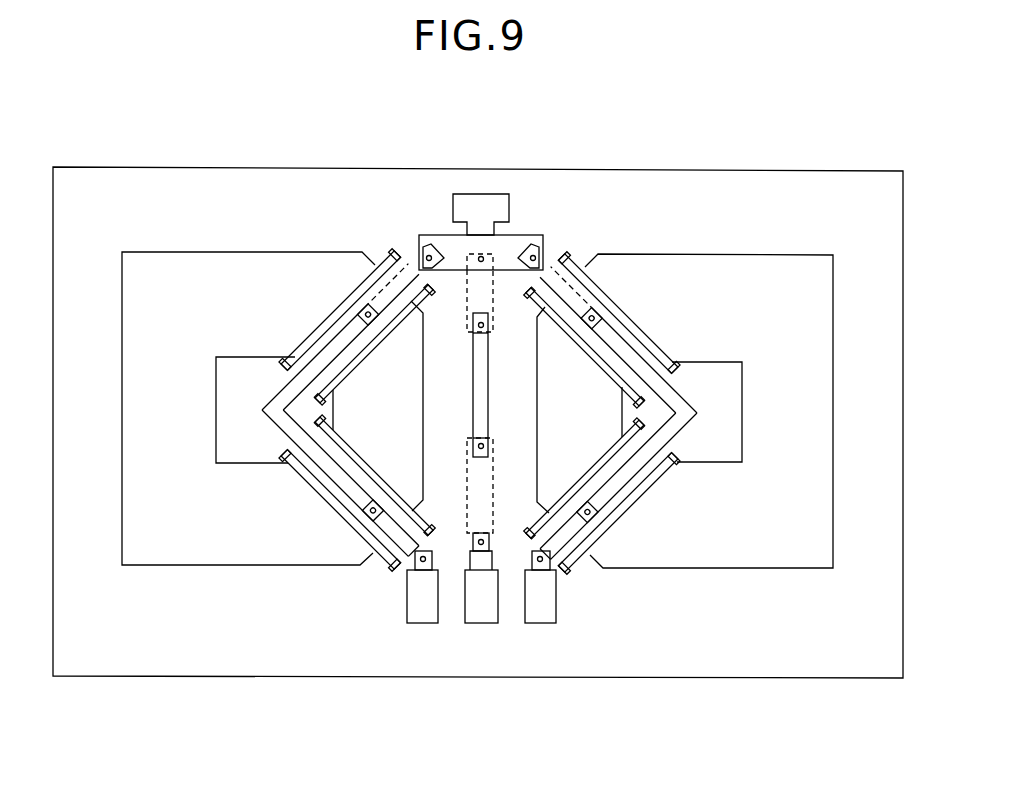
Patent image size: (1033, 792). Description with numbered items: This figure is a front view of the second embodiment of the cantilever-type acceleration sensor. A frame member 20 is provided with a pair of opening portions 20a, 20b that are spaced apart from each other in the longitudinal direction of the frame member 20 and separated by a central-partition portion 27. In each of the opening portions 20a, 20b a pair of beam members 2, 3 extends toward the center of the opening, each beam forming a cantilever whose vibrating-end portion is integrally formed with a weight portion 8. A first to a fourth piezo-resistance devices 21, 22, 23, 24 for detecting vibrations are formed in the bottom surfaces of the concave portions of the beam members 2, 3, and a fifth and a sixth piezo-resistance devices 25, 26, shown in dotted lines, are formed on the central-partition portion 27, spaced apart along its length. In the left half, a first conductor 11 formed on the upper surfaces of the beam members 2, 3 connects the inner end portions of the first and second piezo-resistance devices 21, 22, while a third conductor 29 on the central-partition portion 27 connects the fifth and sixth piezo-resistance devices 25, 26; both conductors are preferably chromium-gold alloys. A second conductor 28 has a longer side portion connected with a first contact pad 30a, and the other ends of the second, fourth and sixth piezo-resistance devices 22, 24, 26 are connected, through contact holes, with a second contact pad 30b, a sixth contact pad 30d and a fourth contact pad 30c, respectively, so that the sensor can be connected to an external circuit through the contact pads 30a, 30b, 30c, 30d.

The beam member 2 is at (357, 345).
The beam member 3 is at (340, 497).
The weight portion 8 is at (213, 383).
The first conductor 11 is at (323, 358).
The frame member 20 is at (340, 682).
The opening portion 20a is at (122, 285).
The opening portion 20b is at (833, 300).
The first piezo-resistance device 21 is at (411, 262).
The second piezo-resistance device 22 is at (392, 564).
The third piezo-resistance device 23 is at (546, 263).
The fourth piezo-resistance device 24 is at (575, 565).
The fifth piezo-resistance device 25 is at (485, 304).
The sixth piezo-resistance device 26 is at (482, 474).
The central-partition portion 27 is at (528, 408).
The second conductor 28 is at (523, 233).
The third conductor 29 is at (473, 408).
The first contact pad 30a is at (470, 200).
The second contact pad 30b is at (428, 612).
The fourth contact pad 30c is at (484, 610).
The sixth contact pad 30d is at (543, 612).